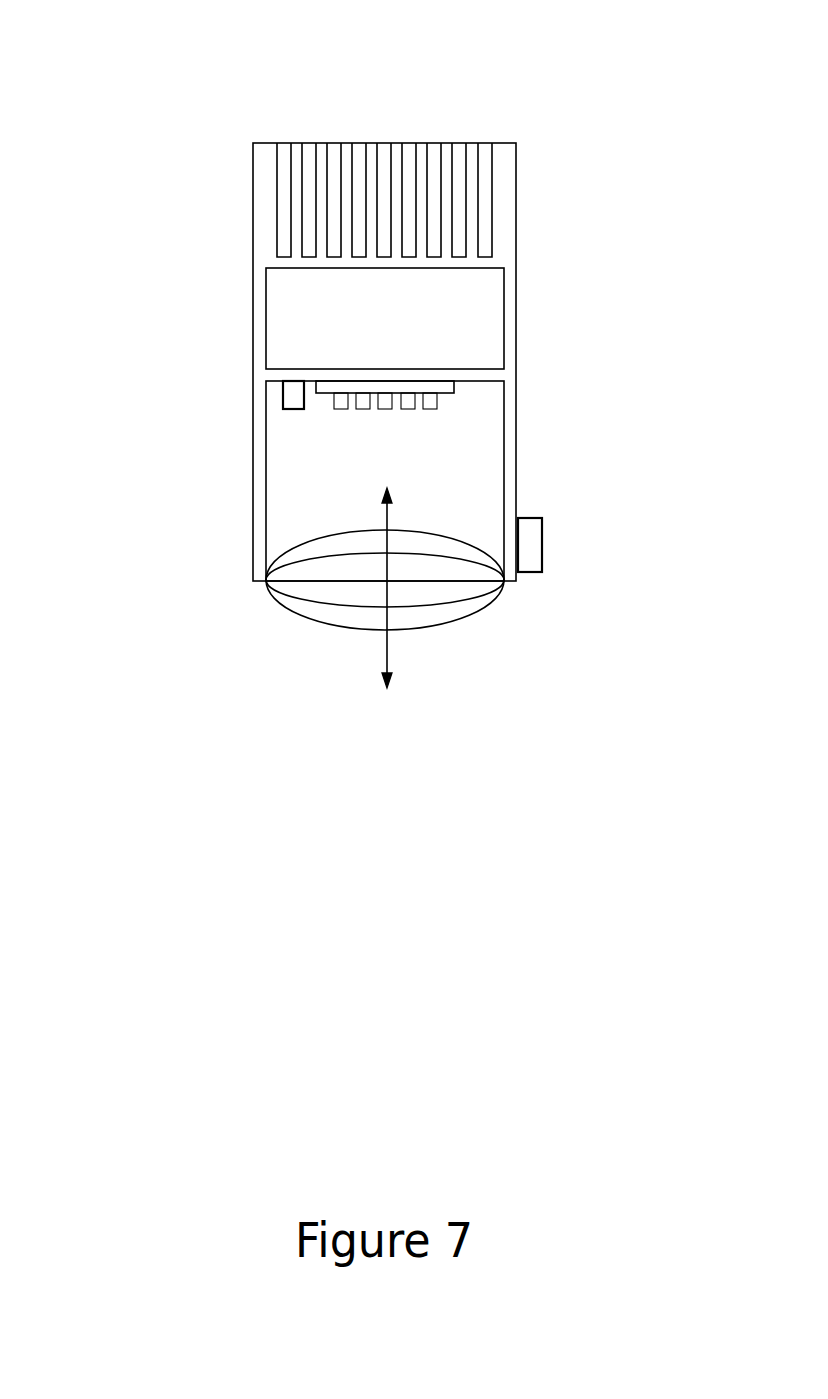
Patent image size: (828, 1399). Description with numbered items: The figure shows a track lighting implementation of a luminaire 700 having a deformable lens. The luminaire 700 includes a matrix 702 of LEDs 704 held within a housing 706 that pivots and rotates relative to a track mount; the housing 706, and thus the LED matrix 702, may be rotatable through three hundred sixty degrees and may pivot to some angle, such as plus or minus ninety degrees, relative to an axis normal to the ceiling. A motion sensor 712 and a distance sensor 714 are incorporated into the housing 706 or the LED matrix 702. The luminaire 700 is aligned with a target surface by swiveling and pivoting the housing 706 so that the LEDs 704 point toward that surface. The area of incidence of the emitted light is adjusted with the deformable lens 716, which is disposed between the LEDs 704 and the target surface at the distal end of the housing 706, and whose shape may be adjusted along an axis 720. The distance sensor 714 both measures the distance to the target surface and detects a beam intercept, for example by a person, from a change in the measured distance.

The luminaire 700 is at (266, 70).
The matrix of LEDs 702 is at (344, 450).
The LEDs 704 is at (437, 404).
The housing 706 is at (253, 202).
The motion sensor 712 is at (533, 553).
The distance sensor 714 is at (283, 397).
The deformable lens 716 is at (280, 602).
The axis 720 is at (367, 588).